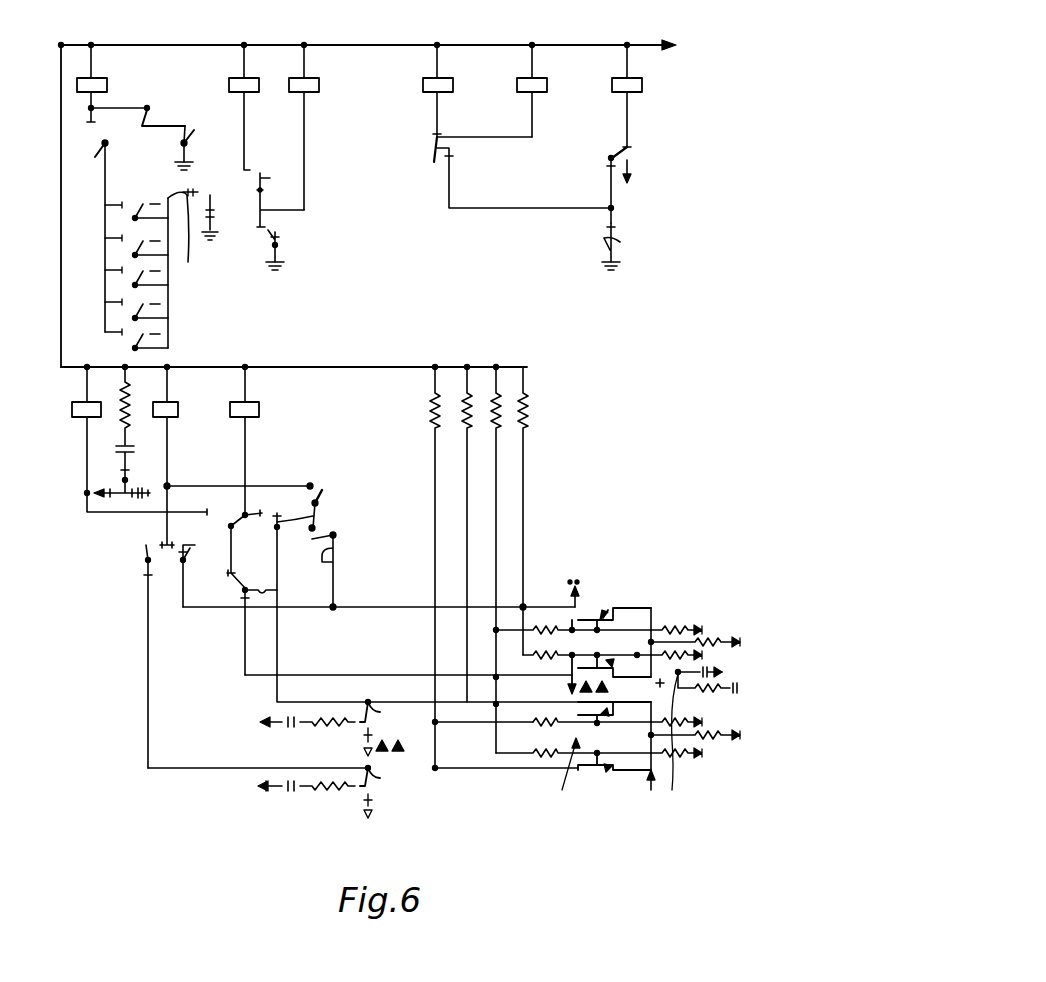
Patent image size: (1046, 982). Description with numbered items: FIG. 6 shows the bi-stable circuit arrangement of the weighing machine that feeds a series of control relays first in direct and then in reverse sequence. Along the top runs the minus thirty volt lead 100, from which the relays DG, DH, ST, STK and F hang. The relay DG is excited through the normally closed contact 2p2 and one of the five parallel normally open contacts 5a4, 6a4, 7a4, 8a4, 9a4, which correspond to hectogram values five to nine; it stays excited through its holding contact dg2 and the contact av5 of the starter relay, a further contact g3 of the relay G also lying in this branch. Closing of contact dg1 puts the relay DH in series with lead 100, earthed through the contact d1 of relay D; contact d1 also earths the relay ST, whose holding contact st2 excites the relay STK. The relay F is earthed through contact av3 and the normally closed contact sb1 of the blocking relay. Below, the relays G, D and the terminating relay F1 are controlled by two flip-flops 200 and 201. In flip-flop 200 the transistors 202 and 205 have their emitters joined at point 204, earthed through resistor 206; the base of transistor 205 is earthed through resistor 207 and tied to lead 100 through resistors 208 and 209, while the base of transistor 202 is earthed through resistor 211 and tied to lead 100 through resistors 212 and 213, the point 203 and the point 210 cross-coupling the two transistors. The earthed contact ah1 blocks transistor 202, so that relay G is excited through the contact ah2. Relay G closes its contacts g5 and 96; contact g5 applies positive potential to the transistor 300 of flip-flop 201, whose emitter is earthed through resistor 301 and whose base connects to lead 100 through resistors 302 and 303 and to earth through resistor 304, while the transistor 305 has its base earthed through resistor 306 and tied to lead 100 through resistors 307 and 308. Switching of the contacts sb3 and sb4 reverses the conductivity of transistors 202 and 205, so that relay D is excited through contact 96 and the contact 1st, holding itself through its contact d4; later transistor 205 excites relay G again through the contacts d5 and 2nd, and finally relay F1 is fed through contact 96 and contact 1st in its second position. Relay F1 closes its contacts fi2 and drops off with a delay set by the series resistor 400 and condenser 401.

The minus thirty volt lead 100 is at (383, 45).
The resistor 400 is at (128, 403).
The condenser 401 is at (134, 450).
The resistor 308 is at (430, 395).
The resistor 303 is at (470, 395).
The resistor 209 is at (500, 393).
The resistor 213 is at (530, 410).
The circuit point 203 is at (520, 610).
The circuit point 210 is at (552, 605).
The transistor 205 is at (655, 610).
The emitter junction point 204 is at (680, 625).
The resistor 207 is at (700, 635).
The resistor 211 is at (710, 640).
The resistor 206 is at (730, 640).
The resistor 208 is at (572, 622).
The flip-flop 200 is at (680, 600).
The resistor 212 is at (545, 650).
The transistor 202 is at (590, 664).
The resistor 307 is at (545, 727).
The flip-flop 201 is at (597, 759).
The resistor 302 is at (545, 757).
The resistor 306 is at (650, 750).
The transistor 300 is at (590, 772).
The resistor 304 is at (660, 780).
The resistor 301 is at (722, 740).
The transistor 305 is at (595, 775).
The relay DG is at (107, 82).
The relay DH is at (236, 80).
The relay ST is at (316, 88).
The relay STK is at (545, 88).
The relay F is at (642, 85).
The terminating relay F1 is at (134, 441).
The relay G is at (175, 412).
The relay D is at (259, 412).
The holding contact of relay DG dg2 is at (152, 115).
The normally open contact of relay DG dg1 is at (280, 200).
The contact of starter relay av5 is at (192, 138).
The contact of starter relay av3 is at (622, 246).
The contact g3 is at (100, 237).
The normally open contact of relay G g5 is at (140, 565).
The normally open contact of relay G 96 is at (406, 627).
The normally open contact 5a4 is at (135, 195).
The normally open contact 6a4 is at (140, 247).
The normally open contact 7a4 is at (165, 276).
The normally open contact 8a4 is at (165, 310).
The normally open contact 9a4 is at (165, 340).
The normally closed contact of relay 2P 2p2 is at (195, 232).
The normally open contact of relay D d1 is at (280, 240).
The contact of relay D d4 is at (313, 516).
The normally open contact of relay D d5 is at (335, 571).
The holding contact of relay ST st2 is at (443, 152).
The normally closed contact of blocking relay sb1 is at (620, 155).
The contact of blocking relay sb3 is at (396, 728).
The contact of blocking relay sb4 is at (378, 786).
The contact fi2 is at (118, 493).
The self-holding contact of relay AH ah1 is at (704, 739).
The normally open contact of relay AH ah2 is at (377, 576).
The contact of relay STK 1st is at (243, 522).
The contact 2nd is at (320, 488).